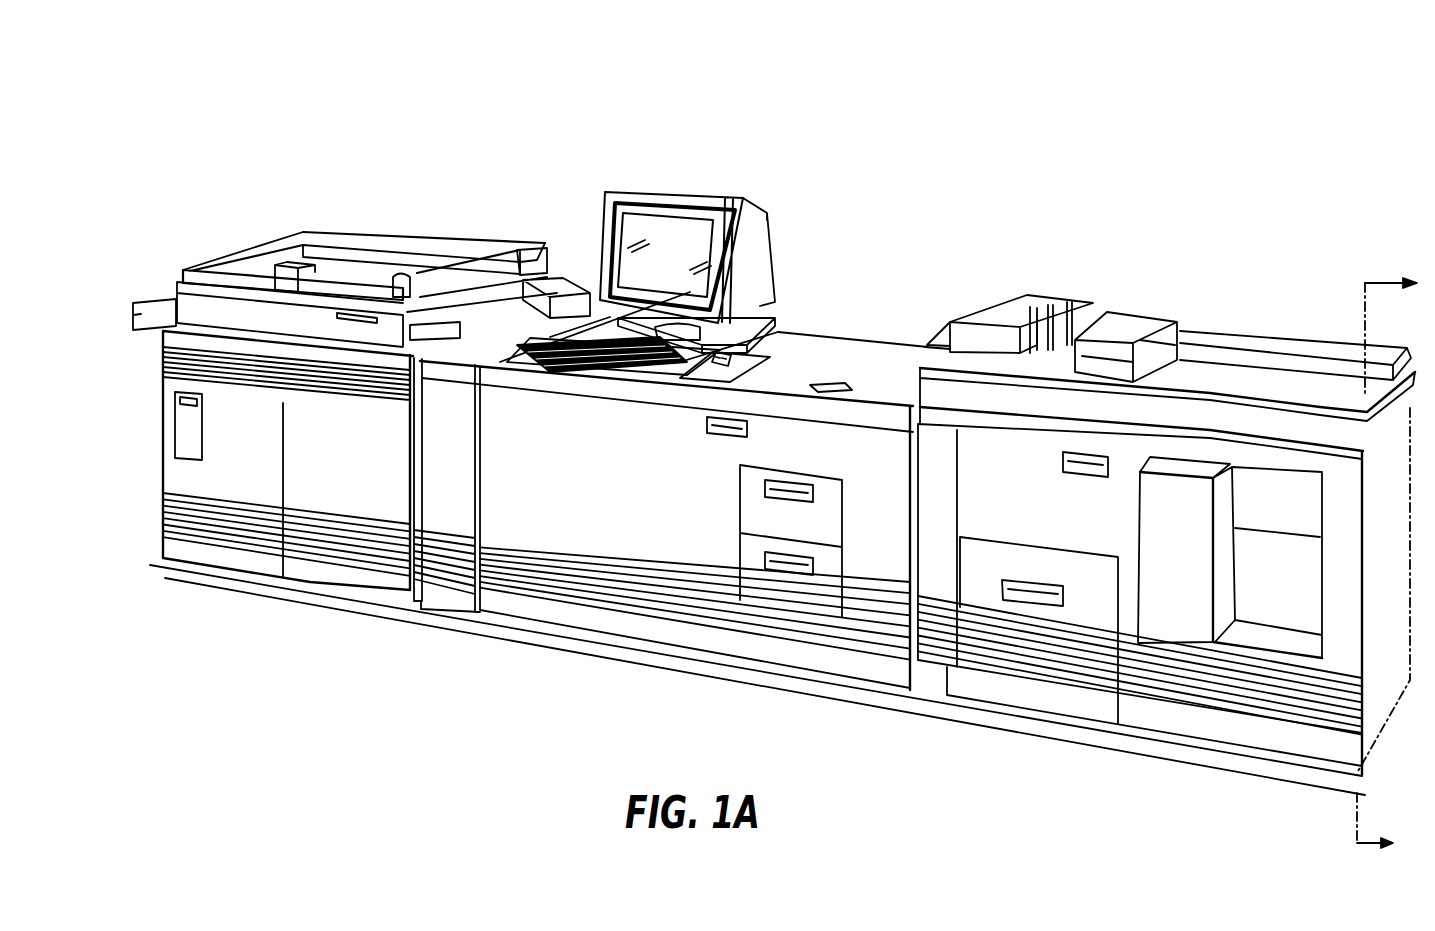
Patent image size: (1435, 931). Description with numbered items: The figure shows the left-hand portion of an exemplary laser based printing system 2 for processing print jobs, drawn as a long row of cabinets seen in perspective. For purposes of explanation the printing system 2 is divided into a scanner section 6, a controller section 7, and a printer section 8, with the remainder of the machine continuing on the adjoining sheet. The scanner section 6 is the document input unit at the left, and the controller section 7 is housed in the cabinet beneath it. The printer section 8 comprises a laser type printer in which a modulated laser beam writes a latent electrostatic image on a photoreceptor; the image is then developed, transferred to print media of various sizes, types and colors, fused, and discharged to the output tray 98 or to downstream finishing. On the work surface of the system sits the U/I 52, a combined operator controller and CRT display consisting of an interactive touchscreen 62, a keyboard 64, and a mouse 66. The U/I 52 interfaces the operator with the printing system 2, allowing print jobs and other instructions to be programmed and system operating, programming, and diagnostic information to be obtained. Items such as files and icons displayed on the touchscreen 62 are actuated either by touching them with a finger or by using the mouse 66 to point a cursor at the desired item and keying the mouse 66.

The printing system 2 is at (888, 135).
The scanner section 6 is at (406, 208).
The controller section 7 is at (151, 505).
The printer section 8 is at (883, 261).
The U/I 52 is at (697, 183).
The interactive touchscreen 62 is at (628, 258).
The keyboard 64 is at (583, 373).
The mouse 66 is at (678, 387).
The output tray 98 is at (1088, 333).